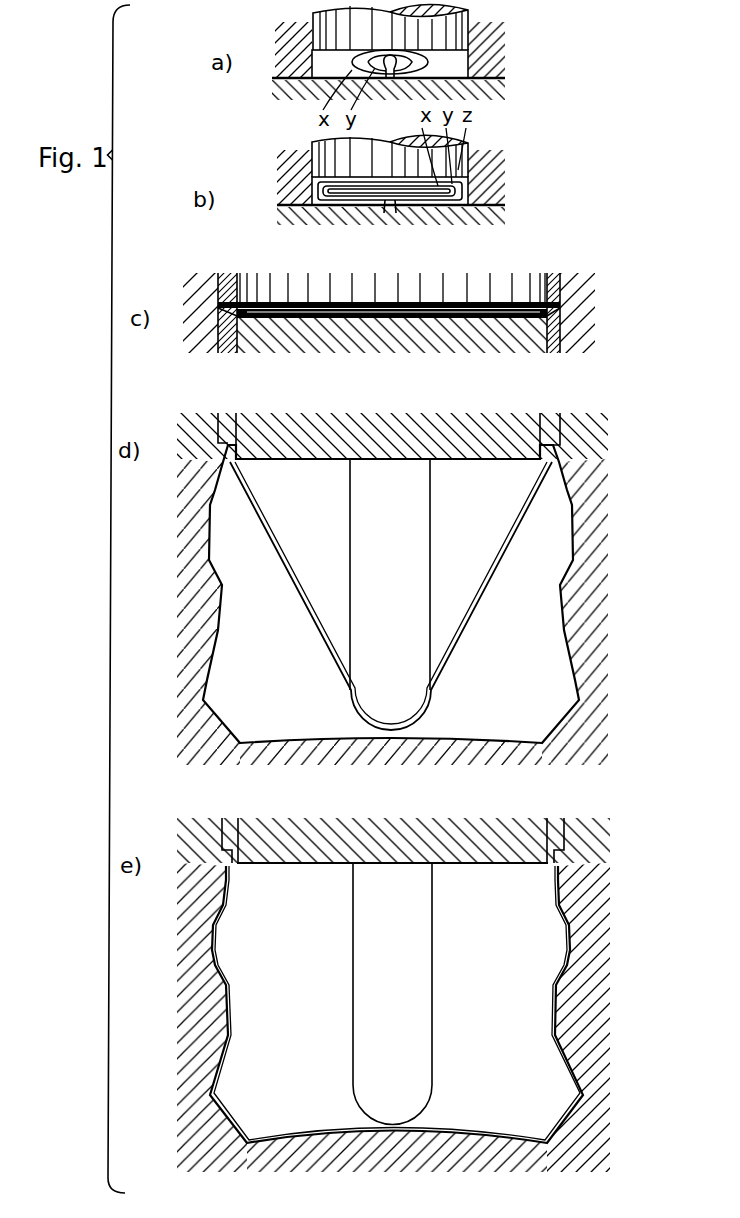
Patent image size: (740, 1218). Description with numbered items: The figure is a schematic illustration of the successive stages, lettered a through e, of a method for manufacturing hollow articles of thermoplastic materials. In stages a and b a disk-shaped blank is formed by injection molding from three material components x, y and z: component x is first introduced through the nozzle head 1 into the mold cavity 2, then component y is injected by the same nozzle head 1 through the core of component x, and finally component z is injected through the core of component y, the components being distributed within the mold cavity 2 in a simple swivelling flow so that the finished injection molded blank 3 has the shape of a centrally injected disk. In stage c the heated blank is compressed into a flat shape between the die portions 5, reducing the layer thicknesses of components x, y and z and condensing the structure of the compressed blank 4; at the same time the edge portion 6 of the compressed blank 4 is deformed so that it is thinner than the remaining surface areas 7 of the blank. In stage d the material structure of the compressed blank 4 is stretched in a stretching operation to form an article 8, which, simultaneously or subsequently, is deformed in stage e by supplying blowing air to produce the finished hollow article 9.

The nozzle head 1 is at (392, 82).
The mold cavity 2 is at (470, 62).
The injection molded blank 3 is at (462, 205).
The compressed blank 4 is at (535, 300).
The die portions 5 is at (290, 318).
The edge portion 6 is at (553, 300).
The remaining surface areas 7 is at (247, 318).
The article 8 is at (478, 605).
The finished hollow article 9 is at (218, 952).